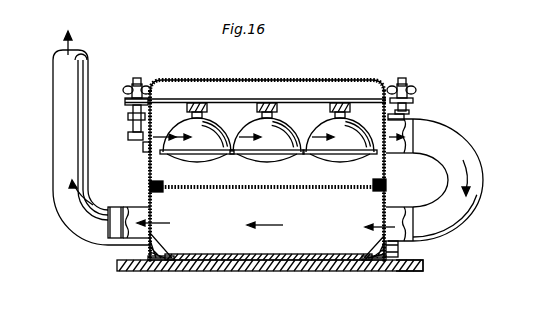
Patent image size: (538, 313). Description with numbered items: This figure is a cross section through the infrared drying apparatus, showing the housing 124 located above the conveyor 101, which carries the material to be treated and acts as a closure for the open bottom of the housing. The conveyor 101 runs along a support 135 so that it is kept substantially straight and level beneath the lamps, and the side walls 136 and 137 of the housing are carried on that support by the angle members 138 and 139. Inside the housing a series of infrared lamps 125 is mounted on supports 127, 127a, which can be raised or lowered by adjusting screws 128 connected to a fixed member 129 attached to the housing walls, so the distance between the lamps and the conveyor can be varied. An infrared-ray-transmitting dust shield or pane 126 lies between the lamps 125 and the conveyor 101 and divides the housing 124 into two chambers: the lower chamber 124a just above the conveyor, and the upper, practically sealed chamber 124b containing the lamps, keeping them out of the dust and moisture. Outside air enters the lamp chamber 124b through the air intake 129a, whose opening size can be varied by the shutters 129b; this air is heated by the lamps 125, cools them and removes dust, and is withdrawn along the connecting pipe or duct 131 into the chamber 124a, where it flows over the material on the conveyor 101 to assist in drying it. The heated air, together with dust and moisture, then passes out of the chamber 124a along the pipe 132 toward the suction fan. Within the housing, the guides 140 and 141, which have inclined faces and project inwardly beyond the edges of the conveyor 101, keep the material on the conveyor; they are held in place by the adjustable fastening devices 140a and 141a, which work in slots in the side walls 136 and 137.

The conveyor 101 is at (232, 257).
The housing 124 is at (273, 80).
The chamber 124a is at (481, 197).
The chamber 124b is at (425, 160).
The infrared lamps 125 is at (175, 130).
The dust shield 126 is at (277, 192).
The support 127 is at (262, 106).
The support 127a is at (125, 100).
The adjusting screws 128 is at (136, 78).
The fixed member 129 is at (128, 136).
The air intake 129a is at (143, 145).
The shutters 129b is at (128, 117).
The connecting pipe 131 is at (481, 172).
The pipe 132 is at (63, 63).
The support 135 is at (118, 272).
The side wall 136 is at (390, 177).
The side wall 137 is at (148, 172).
The angle member 138 is at (125, 246).
The angle member 139 is at (404, 260).
The guide 140 is at (167, 243).
The adjustable fastening device 140a is at (120, 243).
The guide 141 is at (370, 250).
The adjustable fastening device 141a is at (400, 248).